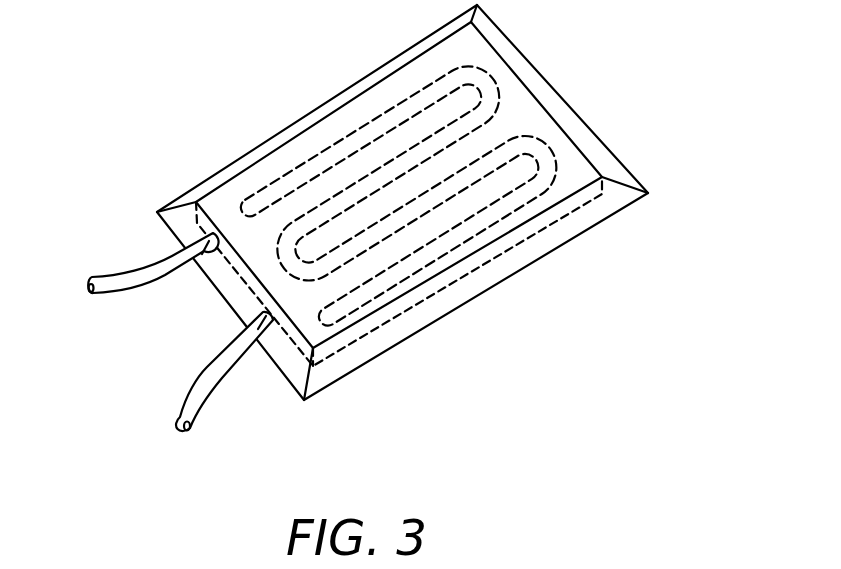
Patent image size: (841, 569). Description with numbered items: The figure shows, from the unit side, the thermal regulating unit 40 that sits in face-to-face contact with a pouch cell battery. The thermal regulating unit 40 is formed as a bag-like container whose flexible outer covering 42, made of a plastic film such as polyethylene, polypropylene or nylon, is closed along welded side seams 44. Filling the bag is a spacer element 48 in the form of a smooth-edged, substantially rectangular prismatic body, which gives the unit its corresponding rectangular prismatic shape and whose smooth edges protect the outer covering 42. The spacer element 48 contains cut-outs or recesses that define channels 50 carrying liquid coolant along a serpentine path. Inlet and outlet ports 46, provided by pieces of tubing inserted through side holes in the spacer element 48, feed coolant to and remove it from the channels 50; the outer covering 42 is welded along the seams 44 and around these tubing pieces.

The thermal regulating unit 40 is at (391, 218).
The flexible outer covering 42 is at (490, 233).
The welded side seams 44 is at (383, 75).
The inlet and outlet ports 46 is at (210, 373).
The spacer element 48 is at (574, 211).
The channels 50 is at (537, 156).